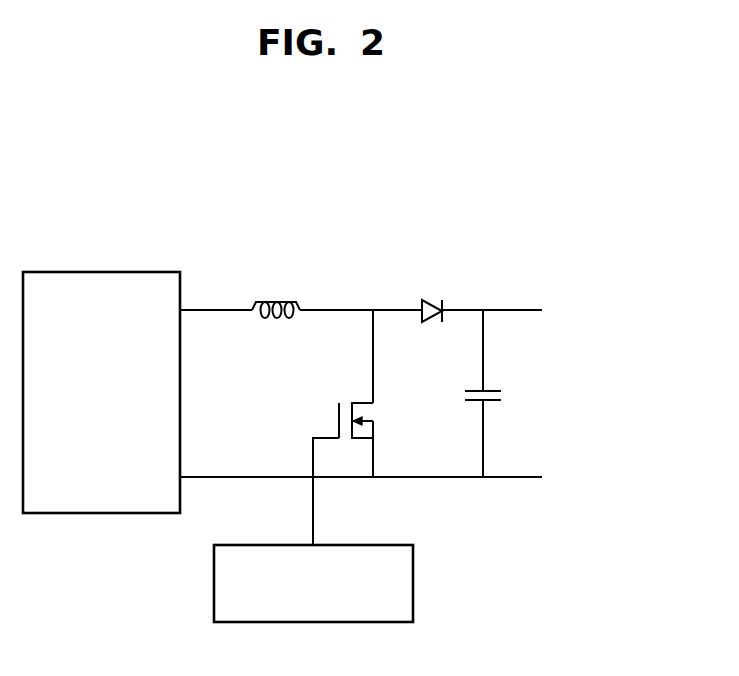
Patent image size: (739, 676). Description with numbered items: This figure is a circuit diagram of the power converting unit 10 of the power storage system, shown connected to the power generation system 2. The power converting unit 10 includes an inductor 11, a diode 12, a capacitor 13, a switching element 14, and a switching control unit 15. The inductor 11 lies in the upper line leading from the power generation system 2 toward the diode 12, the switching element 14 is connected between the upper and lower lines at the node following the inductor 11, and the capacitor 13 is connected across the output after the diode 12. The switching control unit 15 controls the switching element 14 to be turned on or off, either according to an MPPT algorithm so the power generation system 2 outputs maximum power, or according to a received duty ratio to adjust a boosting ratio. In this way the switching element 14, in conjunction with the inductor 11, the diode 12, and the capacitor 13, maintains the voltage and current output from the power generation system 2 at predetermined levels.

The power generation system 2 is at (105, 272).
The power converting unit 10 is at (545, 238).
The inductor 11 is at (295, 302).
The diode 12 is at (436, 299).
The capacitor 13 is at (492, 388).
The switching element 14 is at (374, 412).
The switching control unit 15 is at (366, 544).